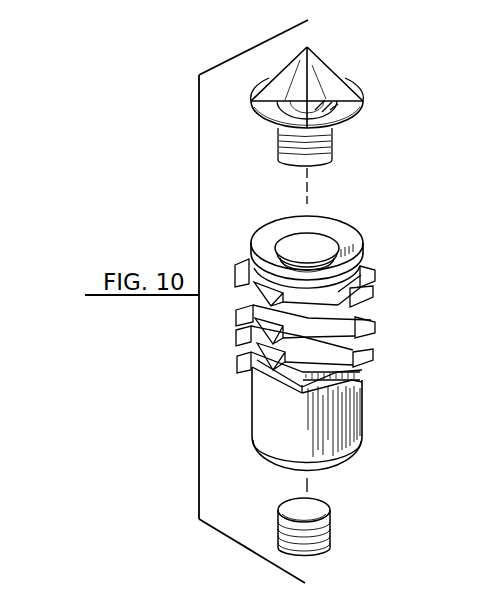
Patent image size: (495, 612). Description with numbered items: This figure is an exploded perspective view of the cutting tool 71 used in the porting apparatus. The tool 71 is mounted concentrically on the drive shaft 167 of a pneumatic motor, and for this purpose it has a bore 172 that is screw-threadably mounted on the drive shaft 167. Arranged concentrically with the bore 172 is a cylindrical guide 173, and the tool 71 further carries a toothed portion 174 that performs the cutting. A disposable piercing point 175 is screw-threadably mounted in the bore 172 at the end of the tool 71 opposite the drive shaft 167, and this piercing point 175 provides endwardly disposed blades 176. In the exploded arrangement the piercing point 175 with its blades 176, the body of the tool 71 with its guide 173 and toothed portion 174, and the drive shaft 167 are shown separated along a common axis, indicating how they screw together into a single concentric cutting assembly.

The tool 71 is at (402, 364).
The drive shaft 167 is at (300, 510).
The bore 172 is at (318, 240).
The concentric cylindrical guide 173 is at (353, 236).
The toothed portion 174 is at (362, 324).
The disposable piercing point 175 is at (309, 48).
The blades 176 is at (347, 78).